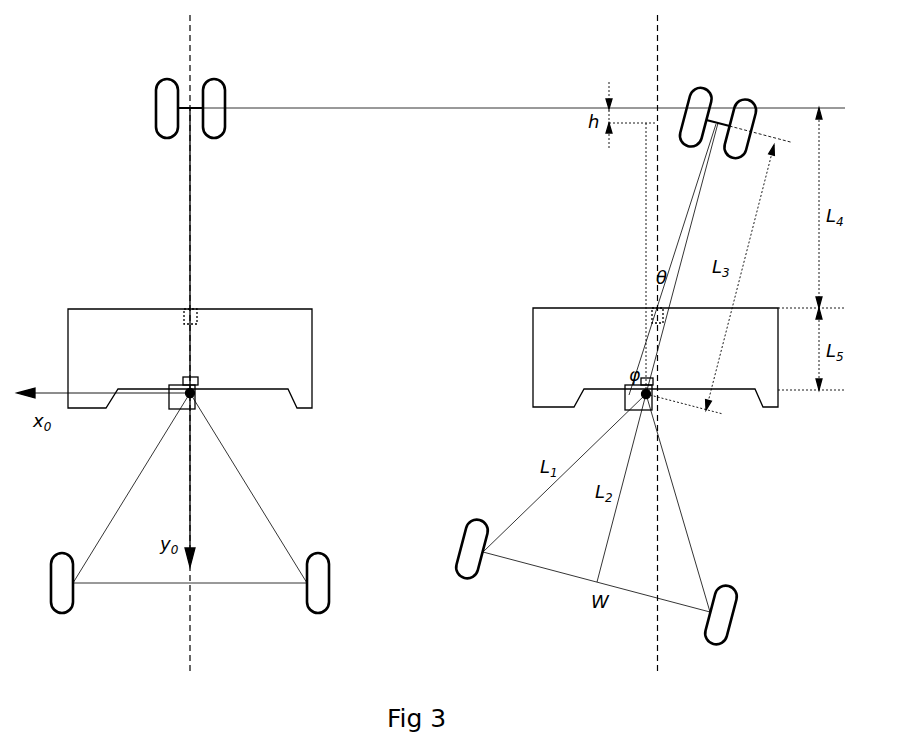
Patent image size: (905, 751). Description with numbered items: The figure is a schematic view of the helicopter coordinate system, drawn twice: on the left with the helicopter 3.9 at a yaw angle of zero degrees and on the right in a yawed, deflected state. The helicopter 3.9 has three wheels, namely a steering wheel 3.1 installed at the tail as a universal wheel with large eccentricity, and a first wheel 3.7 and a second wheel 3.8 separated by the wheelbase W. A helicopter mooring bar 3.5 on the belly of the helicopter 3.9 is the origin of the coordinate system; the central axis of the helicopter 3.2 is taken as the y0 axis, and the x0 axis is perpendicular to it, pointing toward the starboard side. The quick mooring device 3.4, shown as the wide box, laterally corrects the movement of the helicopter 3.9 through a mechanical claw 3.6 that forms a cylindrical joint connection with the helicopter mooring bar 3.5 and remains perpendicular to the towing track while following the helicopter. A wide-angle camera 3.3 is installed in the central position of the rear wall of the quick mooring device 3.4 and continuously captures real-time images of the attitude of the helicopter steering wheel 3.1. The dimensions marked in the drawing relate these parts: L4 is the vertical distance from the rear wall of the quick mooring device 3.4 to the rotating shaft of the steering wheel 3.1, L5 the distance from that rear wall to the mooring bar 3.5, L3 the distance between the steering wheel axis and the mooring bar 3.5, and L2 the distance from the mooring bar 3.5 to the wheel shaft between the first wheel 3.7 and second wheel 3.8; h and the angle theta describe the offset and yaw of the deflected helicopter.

The helicopter steering wheel 3.1 is at (157, 117).
The central axis of the helicopter 3.2 is at (190, 206).
The wide-angle camera 3.3 is at (184, 309).
The quick mooring device 3.4 is at (132, 309).
The helicopter mooring bar 3.5 is at (190, 393).
The mechanical claw 3.6 is at (170, 396).
The first wheel 3.7 is at (74, 595).
The second wheel 3.8 is at (302, 602).
The helicopter 3.9 is at (588, 447).